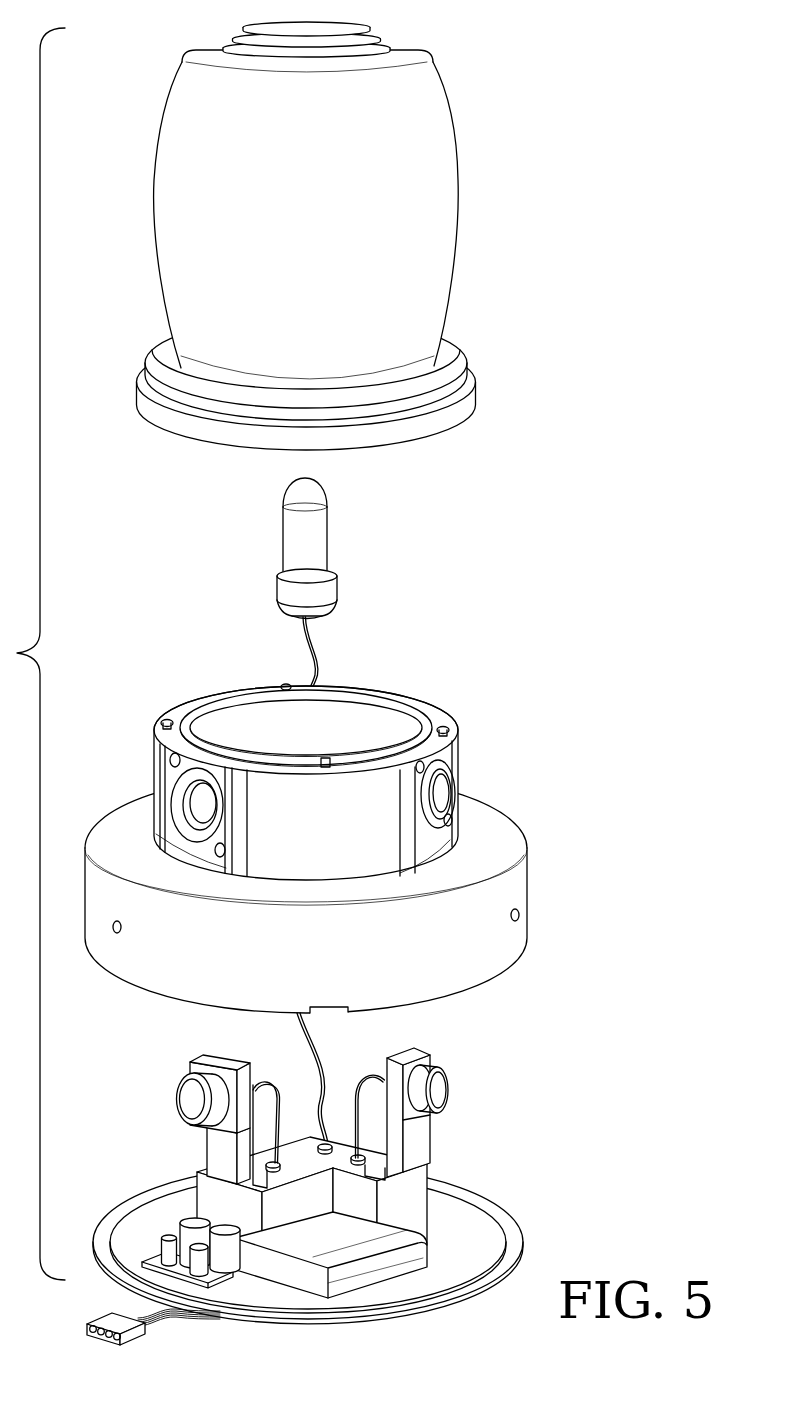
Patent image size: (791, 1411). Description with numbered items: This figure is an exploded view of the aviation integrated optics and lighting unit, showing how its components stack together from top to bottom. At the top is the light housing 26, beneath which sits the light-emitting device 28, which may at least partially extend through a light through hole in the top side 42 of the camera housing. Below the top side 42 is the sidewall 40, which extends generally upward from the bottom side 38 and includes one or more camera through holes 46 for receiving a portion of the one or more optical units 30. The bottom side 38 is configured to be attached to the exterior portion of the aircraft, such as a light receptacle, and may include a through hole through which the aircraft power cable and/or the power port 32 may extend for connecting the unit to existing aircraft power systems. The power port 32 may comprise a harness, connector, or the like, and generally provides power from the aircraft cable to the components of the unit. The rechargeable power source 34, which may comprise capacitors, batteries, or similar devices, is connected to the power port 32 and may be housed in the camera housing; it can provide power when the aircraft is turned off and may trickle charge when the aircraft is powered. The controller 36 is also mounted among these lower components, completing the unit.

The light housing 26 is at (445, 190).
The light-emitting device 28 is at (318, 540).
The optical units 30 is at (190, 1067).
The power port 32 is at (167, 1328).
The rechargeable power source 34 is at (172, 1226).
The controller 36 is at (383, 1250).
The bottom side 38 is at (482, 1195).
The sidewall 40 is at (452, 760).
The top side 42 is at (427, 714).
The camera through holes 46 is at (185, 811).